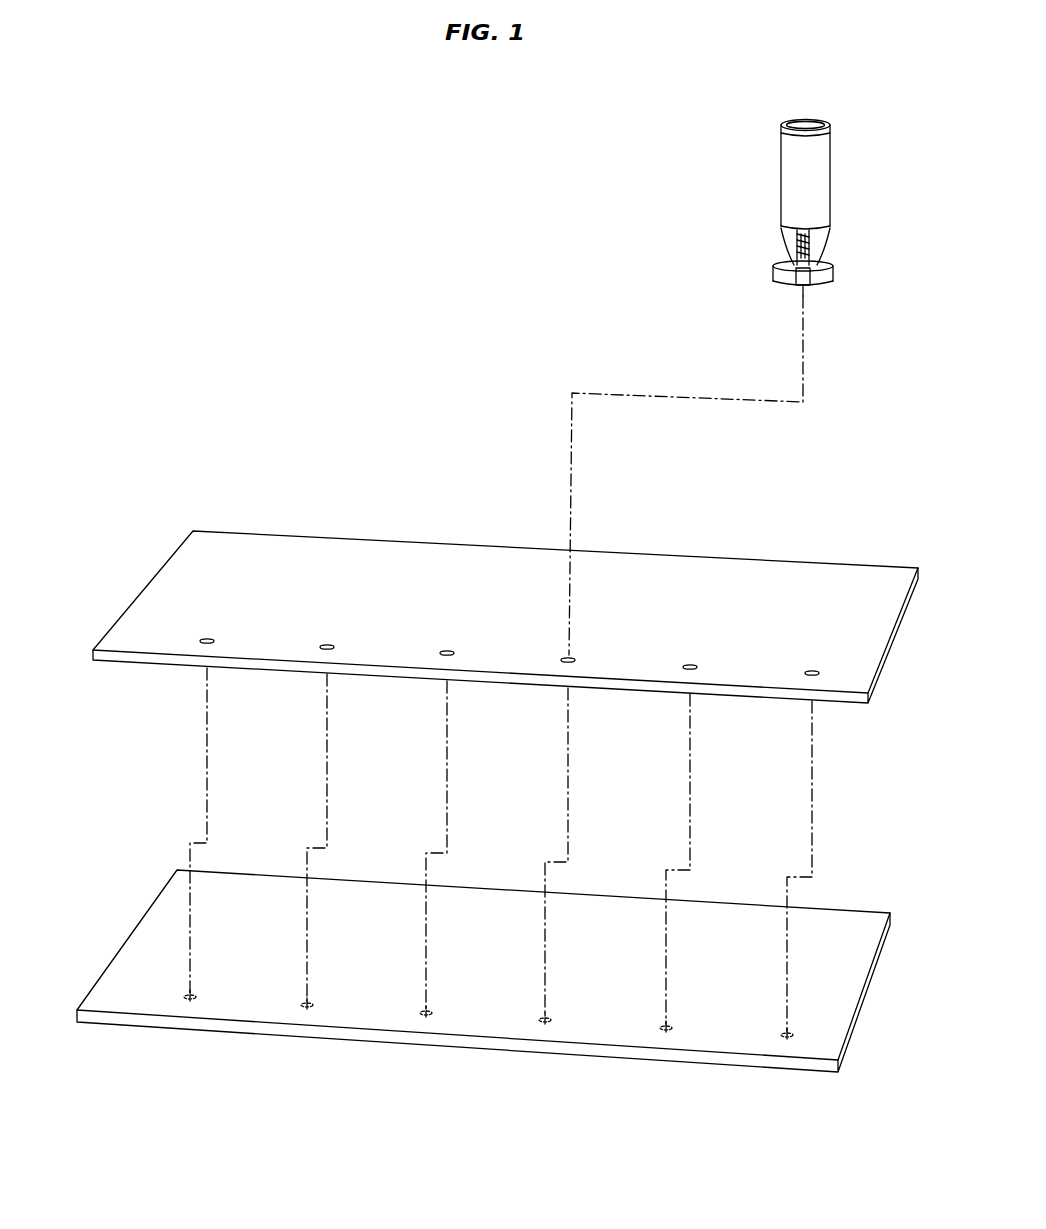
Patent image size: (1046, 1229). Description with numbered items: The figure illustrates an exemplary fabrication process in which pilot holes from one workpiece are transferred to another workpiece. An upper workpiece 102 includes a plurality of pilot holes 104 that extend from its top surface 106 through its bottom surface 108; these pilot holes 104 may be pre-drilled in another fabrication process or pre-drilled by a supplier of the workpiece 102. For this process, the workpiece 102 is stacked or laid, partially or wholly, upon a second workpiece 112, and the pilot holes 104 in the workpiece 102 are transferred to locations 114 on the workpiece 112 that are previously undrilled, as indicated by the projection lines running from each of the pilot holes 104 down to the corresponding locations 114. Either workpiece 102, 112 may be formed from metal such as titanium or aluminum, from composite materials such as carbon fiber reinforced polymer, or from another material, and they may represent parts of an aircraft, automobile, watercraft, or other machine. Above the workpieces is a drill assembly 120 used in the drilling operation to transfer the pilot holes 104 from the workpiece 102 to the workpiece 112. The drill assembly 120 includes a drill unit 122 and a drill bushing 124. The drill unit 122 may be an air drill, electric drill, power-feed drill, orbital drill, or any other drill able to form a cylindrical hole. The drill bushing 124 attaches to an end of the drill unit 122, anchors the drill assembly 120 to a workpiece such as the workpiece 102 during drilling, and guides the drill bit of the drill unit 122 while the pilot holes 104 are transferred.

The workpiece 102 is at (780, 578).
The pilot holes 104 is at (207, 638).
The top surface 106 is at (173, 594).
The bottom surface 108 is at (148, 678).
The workpiece 112 is at (843, 1001).
The locations 114 is at (187, 991).
The drill assembly 120 is at (855, 120).
The drill unit 122 is at (789, 168).
The drill bushing 124 is at (781, 273).